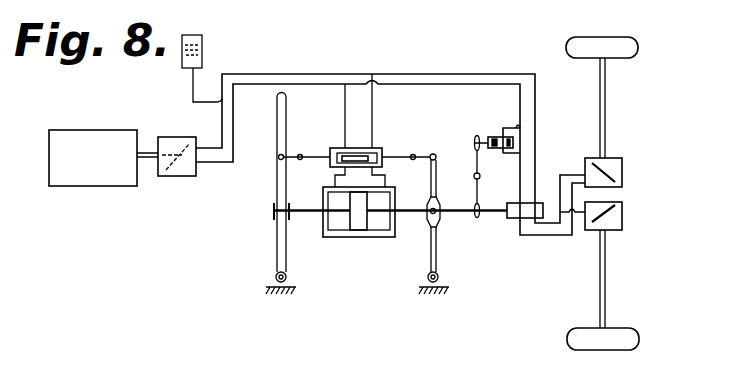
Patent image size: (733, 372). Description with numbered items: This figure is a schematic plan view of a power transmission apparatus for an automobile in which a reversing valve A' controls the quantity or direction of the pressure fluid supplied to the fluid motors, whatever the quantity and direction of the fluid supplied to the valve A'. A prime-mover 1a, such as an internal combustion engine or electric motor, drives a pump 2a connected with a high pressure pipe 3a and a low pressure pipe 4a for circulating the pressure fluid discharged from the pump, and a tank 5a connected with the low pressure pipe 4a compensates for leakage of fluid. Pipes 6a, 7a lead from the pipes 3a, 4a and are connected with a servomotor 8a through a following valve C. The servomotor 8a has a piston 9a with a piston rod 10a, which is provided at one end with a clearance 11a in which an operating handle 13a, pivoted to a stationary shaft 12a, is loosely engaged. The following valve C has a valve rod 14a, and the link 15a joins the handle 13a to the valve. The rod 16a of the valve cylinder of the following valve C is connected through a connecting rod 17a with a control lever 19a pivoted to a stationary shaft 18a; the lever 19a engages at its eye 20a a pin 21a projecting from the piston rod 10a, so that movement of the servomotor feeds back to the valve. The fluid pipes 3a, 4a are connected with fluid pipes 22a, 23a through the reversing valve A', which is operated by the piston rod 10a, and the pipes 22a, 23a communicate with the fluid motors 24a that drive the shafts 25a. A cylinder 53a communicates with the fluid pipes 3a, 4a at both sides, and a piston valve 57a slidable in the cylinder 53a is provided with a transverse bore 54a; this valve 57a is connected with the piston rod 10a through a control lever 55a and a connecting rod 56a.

The prime-mover 1a is at (88, 134).
The pump 2a is at (172, 137).
The high pressure pipe 3a is at (322, 84).
The low pressure pipe 4a is at (289, 73).
The tank 5a is at (181, 62).
The pipe 6a is at (372, 107).
The pipe 7a is at (345, 107).
The servomotor 8a is at (340, 237).
The piston 9a is at (360, 226).
The piston rod 10a is at (305, 217).
The clearance 11a is at (274, 219).
The stationary shaft 12a is at (276, 277).
The operating handle 13a is at (277, 185).
The valve rod 14a is at (316, 163).
The link 15a is at (298, 153).
The rod of the valve cylinder 16a is at (395, 161).
The connecting rod 17a is at (428, 153).
The stationary shaft 18a is at (440, 278).
The control lever 19a is at (440, 238).
The eye 20a is at (430, 222).
The pin 21a is at (440, 198).
The fluid pipe 22a is at (545, 236).
The fluid pipe 23a is at (527, 236).
The fluid motors 24a is at (622, 200).
The shafts 25a is at (606, 113).
The cylinder 53a is at (497, 137).
The transverse bore 54a is at (495, 150).
The control lever 55a is at (478, 190).
The connecting rod 56a is at (480, 137).
The piston valve 57a is at (515, 142).
The following valve C is at (382, 148).
The reversing valve A' is at (549, 182).